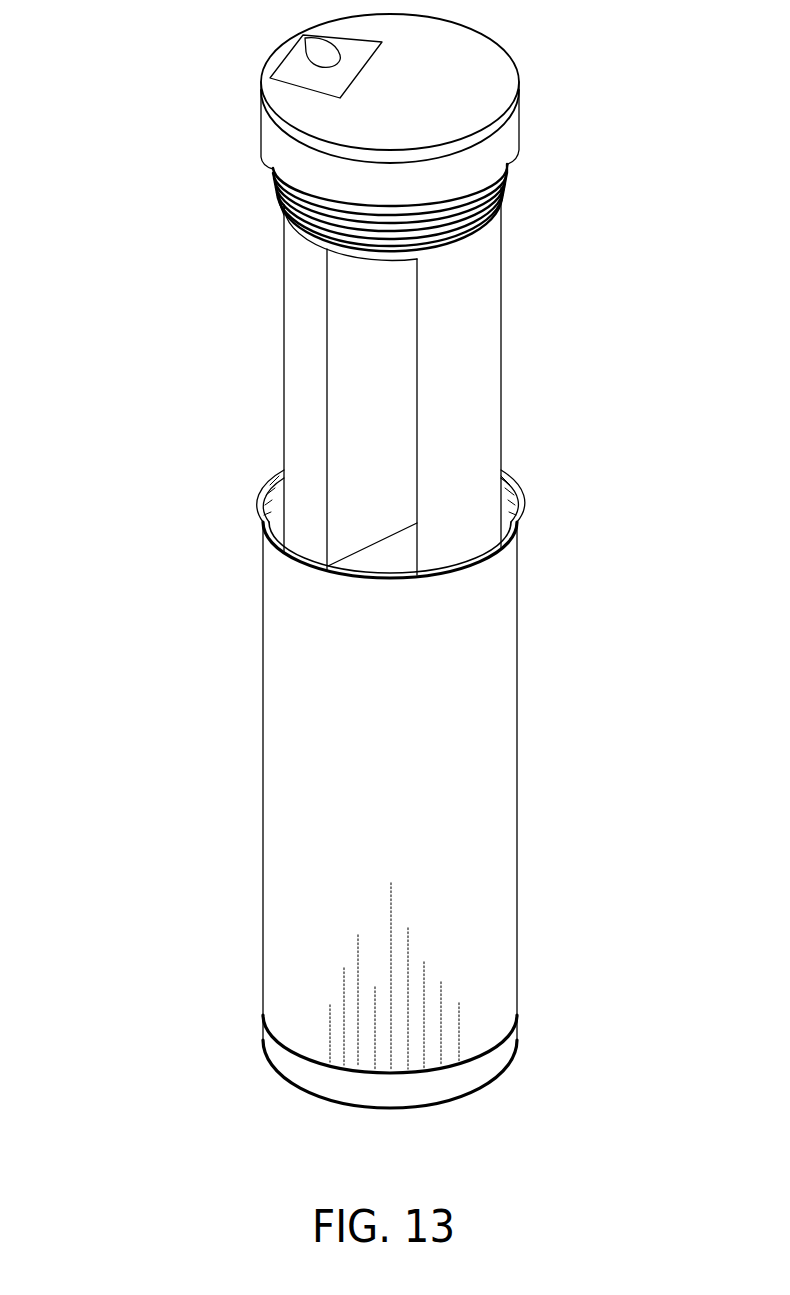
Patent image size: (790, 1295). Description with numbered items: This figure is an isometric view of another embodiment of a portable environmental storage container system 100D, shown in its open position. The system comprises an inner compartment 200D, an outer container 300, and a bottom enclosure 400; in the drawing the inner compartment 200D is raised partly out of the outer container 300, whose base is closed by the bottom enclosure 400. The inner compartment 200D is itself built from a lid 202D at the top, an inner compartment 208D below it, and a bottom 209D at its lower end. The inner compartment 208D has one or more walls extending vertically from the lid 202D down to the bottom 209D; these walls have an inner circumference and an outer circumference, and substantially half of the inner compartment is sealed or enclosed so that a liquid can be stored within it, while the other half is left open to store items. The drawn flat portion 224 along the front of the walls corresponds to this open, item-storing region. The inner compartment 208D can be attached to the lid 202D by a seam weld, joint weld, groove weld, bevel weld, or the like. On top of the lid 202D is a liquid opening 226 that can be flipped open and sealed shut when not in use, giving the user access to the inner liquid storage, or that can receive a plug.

The portable environmental storage container system 100D is at (238, 188).
The inner compartment 200D is at (530, 324).
The lid 202D is at (456, 78).
The liquid opening 226 is at (313, 58).
The inner compartment 208D is at (478, 270).
The flat portion 224 is at (308, 365).
The bottom 209D is at (385, 562).
The outer container 300 is at (536, 760).
The bottom enclosure 400 is at (536, 1039).